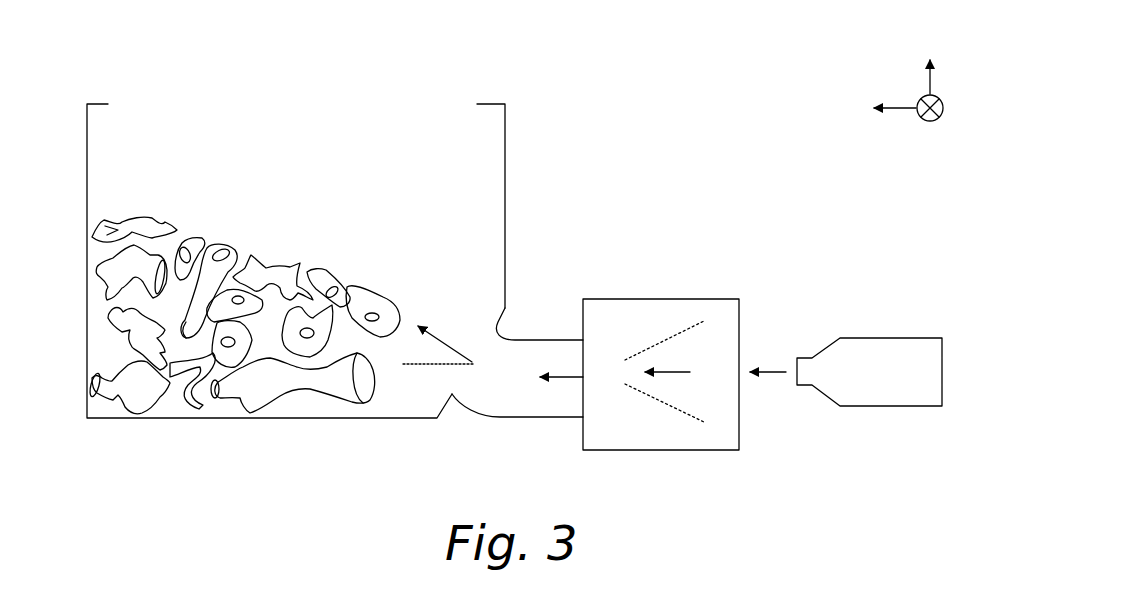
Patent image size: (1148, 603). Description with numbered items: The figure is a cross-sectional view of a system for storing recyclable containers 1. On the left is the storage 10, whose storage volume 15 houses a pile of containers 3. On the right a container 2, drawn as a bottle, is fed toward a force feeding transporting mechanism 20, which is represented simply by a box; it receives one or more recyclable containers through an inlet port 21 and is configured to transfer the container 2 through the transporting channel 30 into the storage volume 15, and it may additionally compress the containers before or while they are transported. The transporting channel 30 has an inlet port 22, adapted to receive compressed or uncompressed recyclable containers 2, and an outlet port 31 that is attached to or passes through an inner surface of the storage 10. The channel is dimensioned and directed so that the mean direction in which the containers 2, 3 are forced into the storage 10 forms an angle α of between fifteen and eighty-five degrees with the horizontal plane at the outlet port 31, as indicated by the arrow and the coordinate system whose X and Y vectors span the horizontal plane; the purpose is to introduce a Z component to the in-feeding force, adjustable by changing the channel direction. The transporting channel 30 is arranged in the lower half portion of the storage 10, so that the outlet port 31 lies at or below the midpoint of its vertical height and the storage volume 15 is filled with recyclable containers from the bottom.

The system for storing recyclable containers 1 is at (749, 126).
The container 2 is at (897, 338).
The containers 3 is at (343, 270).
The storage 10 is at (505, 130).
The storage volume 15 is at (166, 149).
The force feeding transporting mechanism 20 is at (676, 299).
The inlet port 21 is at (774, 371).
The inlet port 22 is at (563, 377).
The transporting channel 30 is at (517, 340).
The outlet port 31 is at (435, 364).